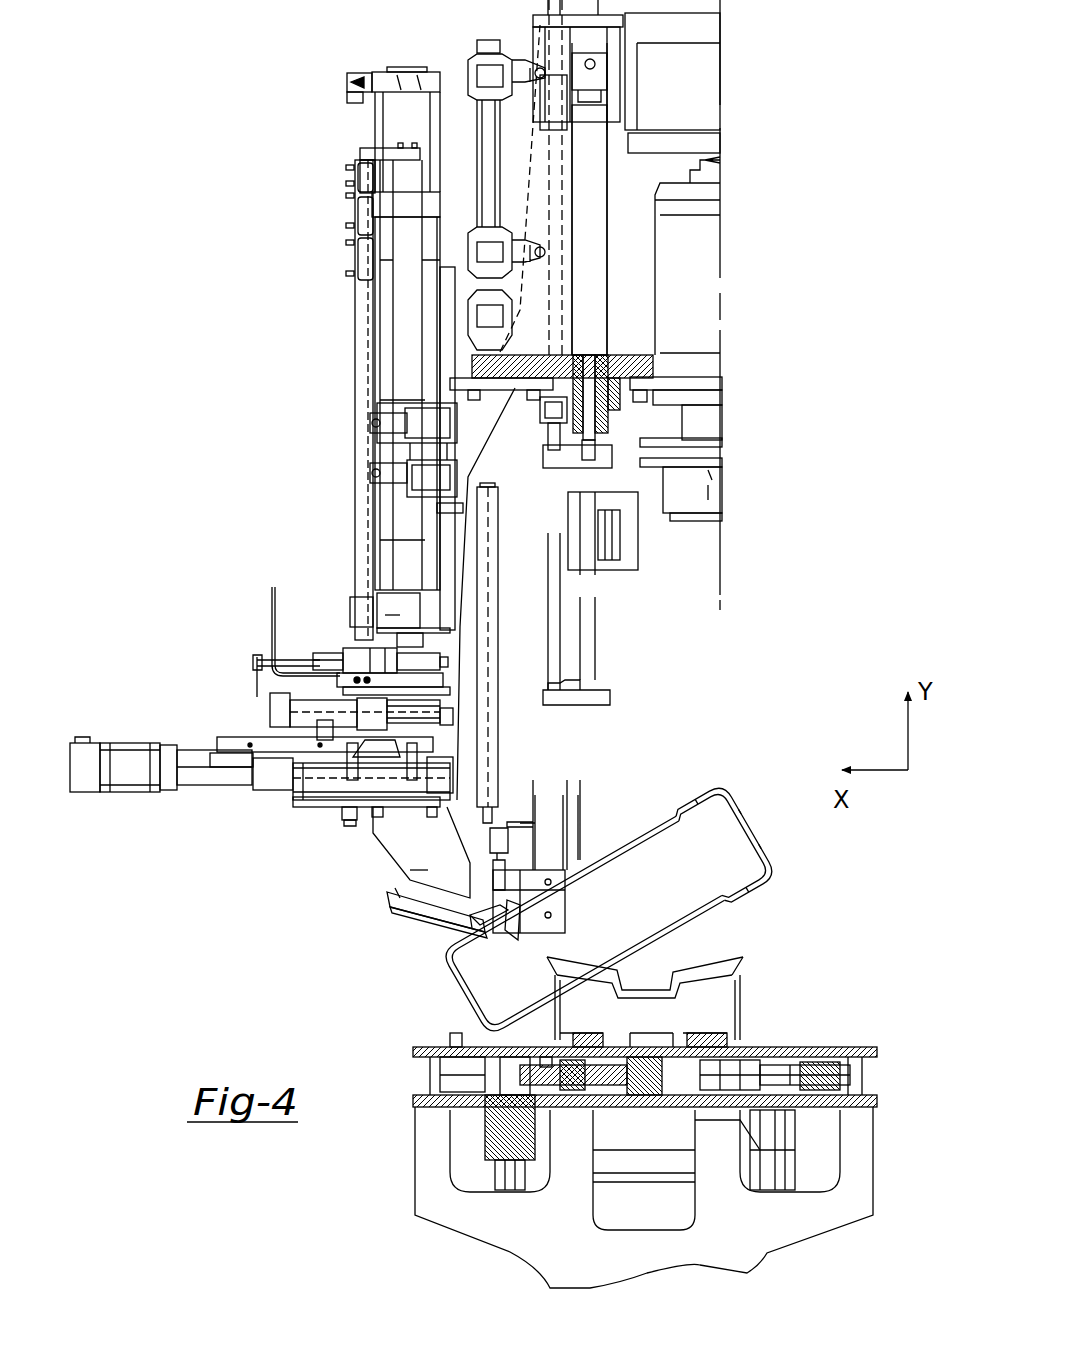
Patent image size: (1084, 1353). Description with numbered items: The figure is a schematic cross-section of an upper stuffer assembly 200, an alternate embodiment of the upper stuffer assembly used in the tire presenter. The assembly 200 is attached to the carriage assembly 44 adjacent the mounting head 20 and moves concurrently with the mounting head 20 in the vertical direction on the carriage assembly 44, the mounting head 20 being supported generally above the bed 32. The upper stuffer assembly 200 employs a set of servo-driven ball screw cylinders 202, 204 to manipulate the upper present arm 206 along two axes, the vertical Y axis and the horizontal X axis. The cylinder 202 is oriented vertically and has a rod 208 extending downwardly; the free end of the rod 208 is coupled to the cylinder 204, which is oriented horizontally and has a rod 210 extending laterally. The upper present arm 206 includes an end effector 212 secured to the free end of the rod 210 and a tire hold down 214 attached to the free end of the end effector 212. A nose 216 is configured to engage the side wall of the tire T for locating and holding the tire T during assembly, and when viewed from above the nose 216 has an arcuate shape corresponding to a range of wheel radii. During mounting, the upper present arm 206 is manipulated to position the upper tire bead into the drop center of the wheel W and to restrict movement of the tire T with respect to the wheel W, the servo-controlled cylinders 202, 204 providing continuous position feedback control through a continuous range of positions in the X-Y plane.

The mounting head 20 is at (688, 247).
The bed 32 is at (818, 1045).
The vertical weldment 44 is at (512, 395).
The upper stuffer assembly 200 is at (252, 193).
The servo-driven ball screw cylinder 202 is at (385, 338).
The servo-driven ball screw cylinder 204 is at (125, 745).
The upper present arm 206 is at (378, 851).
The rod 208 is at (390, 605).
The rod 210 is at (352, 808).
The end effector 212 is at (410, 870).
The tire hold down 214 is at (433, 908).
The nose 216 is at (480, 922).
The tire T is at (457, 1013).
The wheel W is at (549, 980).